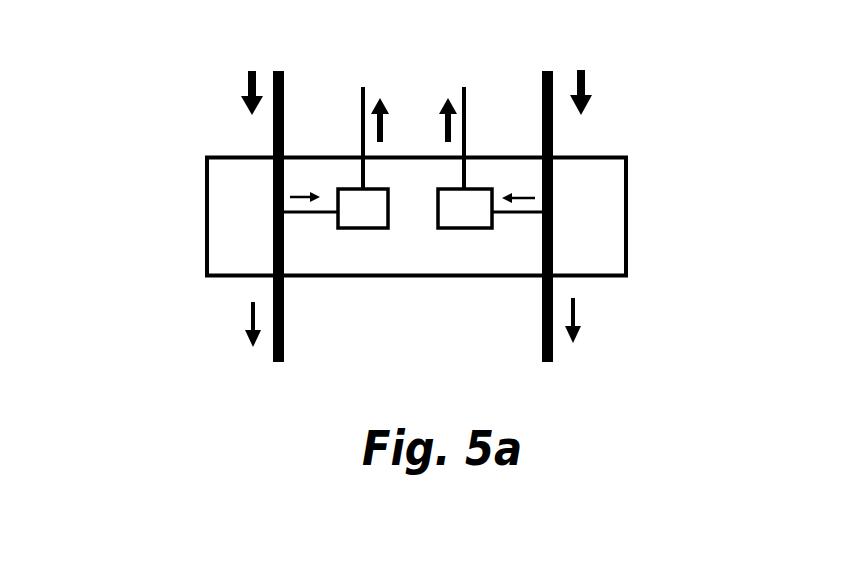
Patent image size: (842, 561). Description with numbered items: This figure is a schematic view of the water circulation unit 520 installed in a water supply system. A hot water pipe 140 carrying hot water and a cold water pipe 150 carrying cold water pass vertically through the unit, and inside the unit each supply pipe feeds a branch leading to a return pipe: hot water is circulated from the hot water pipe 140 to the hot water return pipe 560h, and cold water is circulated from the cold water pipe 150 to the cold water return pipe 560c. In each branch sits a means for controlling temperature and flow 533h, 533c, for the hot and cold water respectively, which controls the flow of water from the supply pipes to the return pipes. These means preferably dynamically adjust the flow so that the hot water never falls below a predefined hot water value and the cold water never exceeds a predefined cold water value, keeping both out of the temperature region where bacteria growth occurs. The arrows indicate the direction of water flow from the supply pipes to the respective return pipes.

The water circulation unit 520 is at (177, 148).
The hot water pipe 140 is at (272, 132).
The cold water pipe 150 is at (553, 130).
The hot water return pipe 560h is at (362, 95).
The cold water return pipe 560c is at (493, 83).
The means for controlling temperature and flow 533h is at (365, 228).
The means for controlling temperature and flow 533c is at (467, 228).